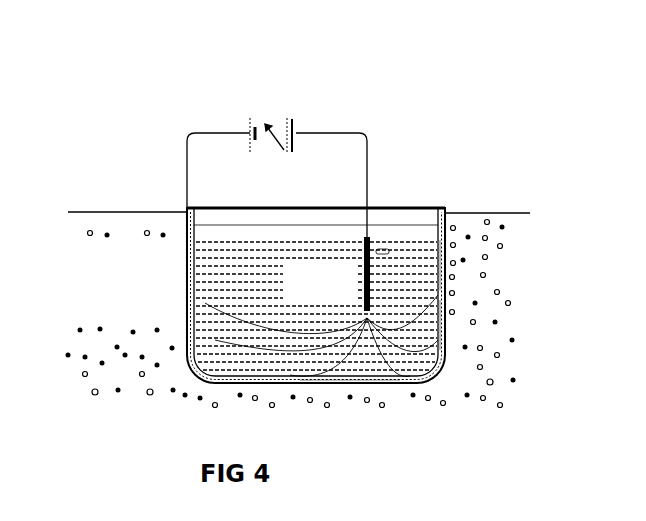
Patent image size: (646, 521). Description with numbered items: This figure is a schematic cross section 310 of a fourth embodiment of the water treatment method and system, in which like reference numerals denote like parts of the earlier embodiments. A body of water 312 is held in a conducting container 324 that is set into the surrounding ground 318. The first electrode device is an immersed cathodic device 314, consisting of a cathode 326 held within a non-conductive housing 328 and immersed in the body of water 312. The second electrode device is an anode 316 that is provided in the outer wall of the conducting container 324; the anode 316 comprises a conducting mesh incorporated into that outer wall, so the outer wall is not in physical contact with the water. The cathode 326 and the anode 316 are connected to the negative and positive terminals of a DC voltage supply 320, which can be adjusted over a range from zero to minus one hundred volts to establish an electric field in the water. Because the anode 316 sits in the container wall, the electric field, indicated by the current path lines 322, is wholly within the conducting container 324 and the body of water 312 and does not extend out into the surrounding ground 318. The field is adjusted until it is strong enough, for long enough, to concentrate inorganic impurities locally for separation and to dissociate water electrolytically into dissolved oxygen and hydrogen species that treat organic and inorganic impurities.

The electrolytic treatment system 310 is at (421, 127).
The body of water 312 is at (219, 234).
The anode conducting mesh 314 is at (448, 265).
The anode 316 is at (448, 333).
The ground 318 is at (80, 230).
The DC power supply 320 is at (277, 65).
The current path lines 322 is at (387, 384).
The conducting container 324 is at (450, 240).
The immersed cathode 326 is at (371, 236).
The electrolyte 328 is at (386, 242).